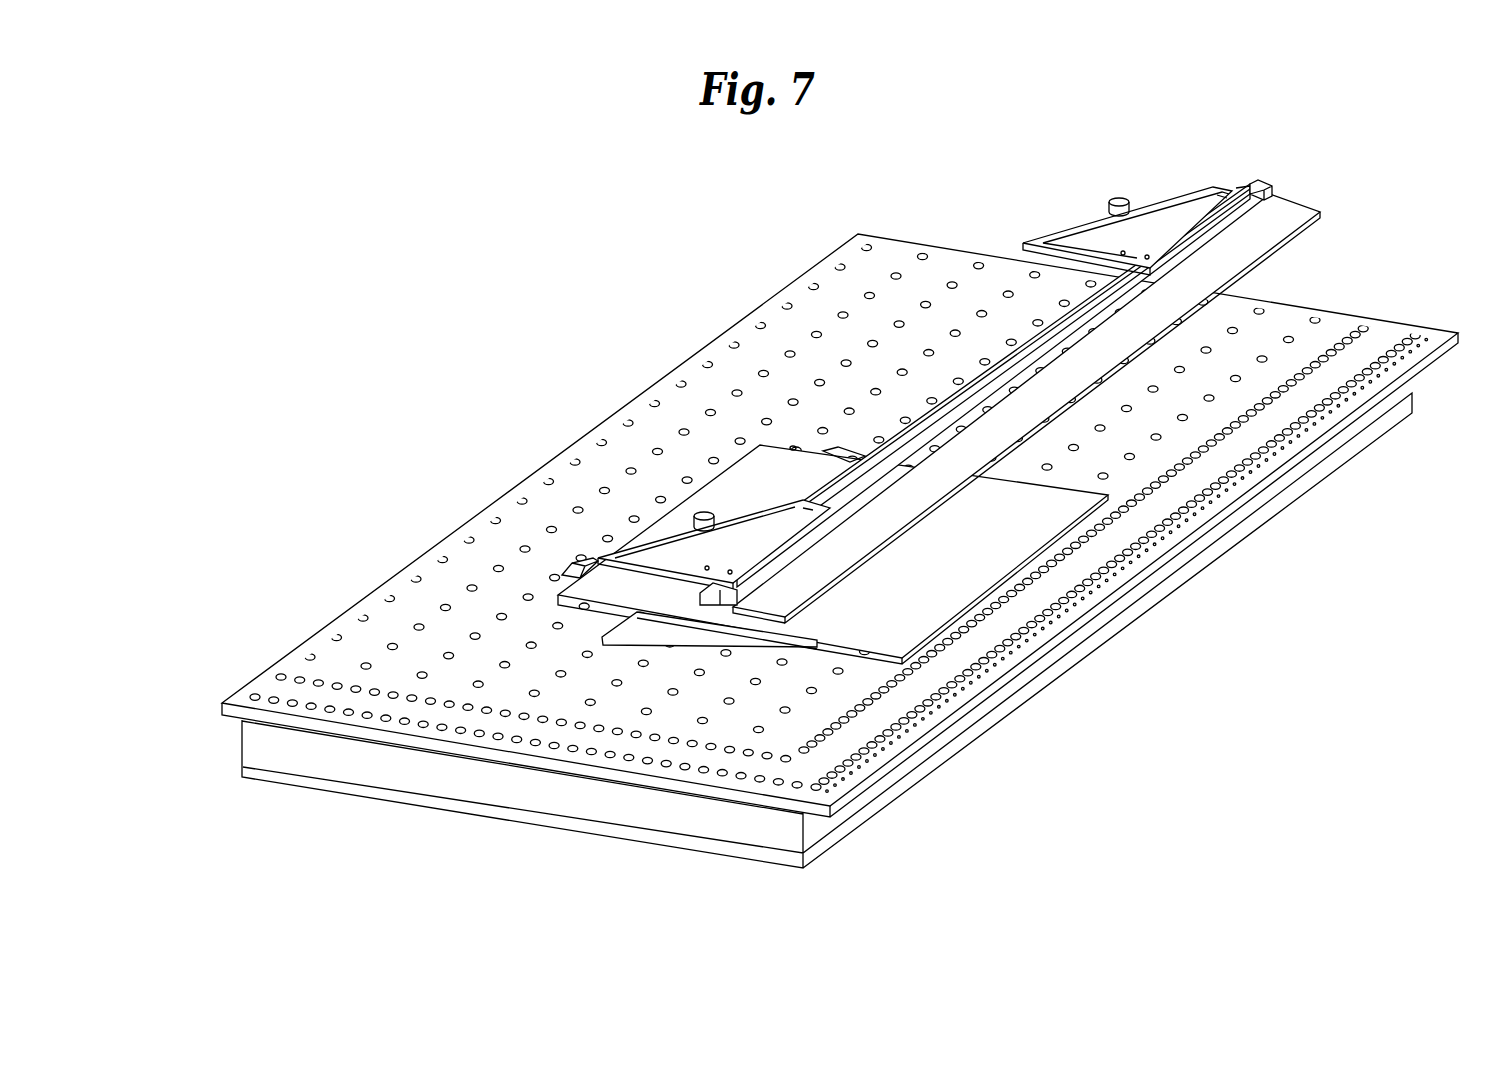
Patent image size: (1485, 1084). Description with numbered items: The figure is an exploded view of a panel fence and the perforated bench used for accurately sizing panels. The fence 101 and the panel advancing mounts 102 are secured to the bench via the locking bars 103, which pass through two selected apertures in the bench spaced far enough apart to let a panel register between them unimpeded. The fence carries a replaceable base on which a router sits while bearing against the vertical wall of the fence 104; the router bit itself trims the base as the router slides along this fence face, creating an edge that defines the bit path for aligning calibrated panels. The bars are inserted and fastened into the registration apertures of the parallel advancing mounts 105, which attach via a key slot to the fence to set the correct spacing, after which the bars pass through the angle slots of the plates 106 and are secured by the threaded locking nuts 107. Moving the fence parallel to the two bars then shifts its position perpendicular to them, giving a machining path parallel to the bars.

The fence 101 is at (1247, 248).
The panel advancing mounts 102 is at (687, 600).
The locking bars 103 is at (628, 558).
The vertical wall of the fence 104 is at (1260, 187).
The parallel advancing mounts 105 is at (1095, 245).
The plates 106 is at (1180, 207).
The threaded locking nuts 107 is at (1127, 196).